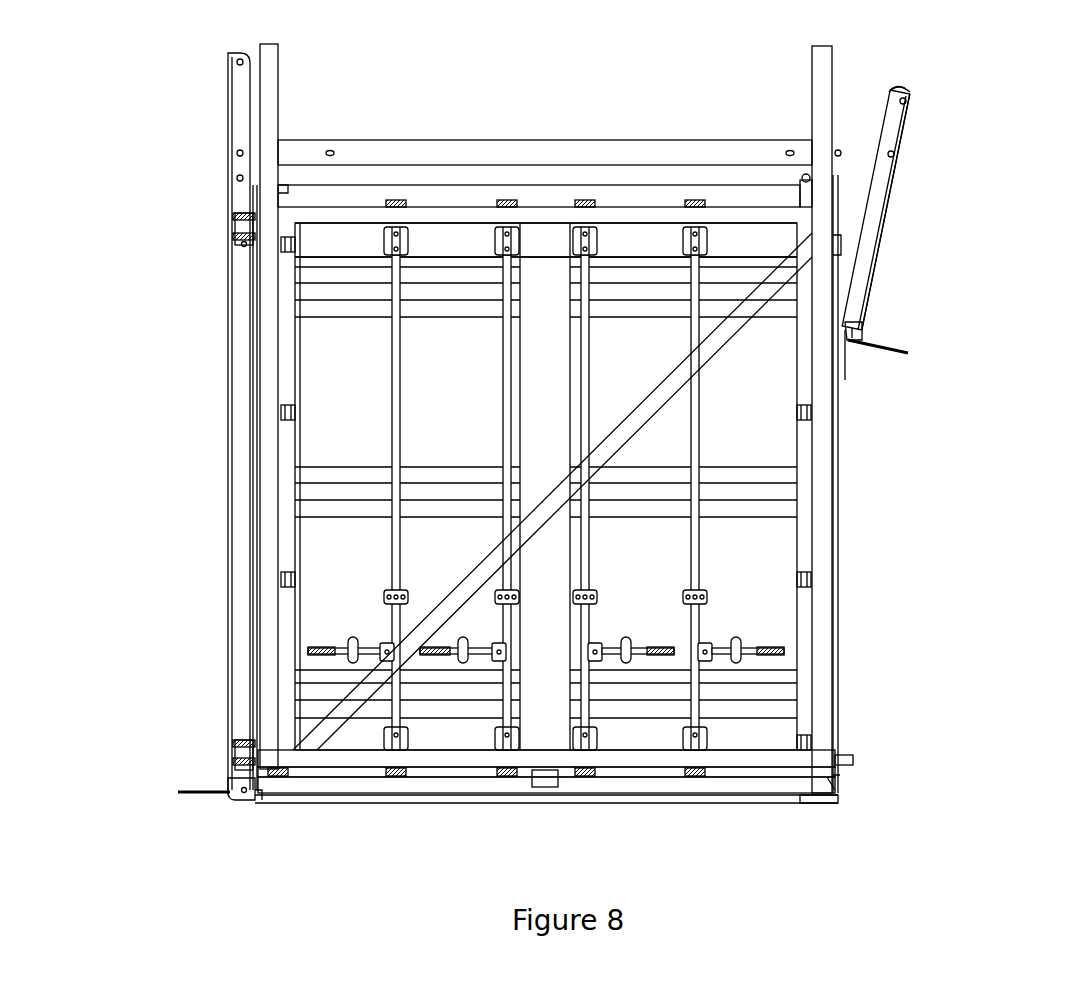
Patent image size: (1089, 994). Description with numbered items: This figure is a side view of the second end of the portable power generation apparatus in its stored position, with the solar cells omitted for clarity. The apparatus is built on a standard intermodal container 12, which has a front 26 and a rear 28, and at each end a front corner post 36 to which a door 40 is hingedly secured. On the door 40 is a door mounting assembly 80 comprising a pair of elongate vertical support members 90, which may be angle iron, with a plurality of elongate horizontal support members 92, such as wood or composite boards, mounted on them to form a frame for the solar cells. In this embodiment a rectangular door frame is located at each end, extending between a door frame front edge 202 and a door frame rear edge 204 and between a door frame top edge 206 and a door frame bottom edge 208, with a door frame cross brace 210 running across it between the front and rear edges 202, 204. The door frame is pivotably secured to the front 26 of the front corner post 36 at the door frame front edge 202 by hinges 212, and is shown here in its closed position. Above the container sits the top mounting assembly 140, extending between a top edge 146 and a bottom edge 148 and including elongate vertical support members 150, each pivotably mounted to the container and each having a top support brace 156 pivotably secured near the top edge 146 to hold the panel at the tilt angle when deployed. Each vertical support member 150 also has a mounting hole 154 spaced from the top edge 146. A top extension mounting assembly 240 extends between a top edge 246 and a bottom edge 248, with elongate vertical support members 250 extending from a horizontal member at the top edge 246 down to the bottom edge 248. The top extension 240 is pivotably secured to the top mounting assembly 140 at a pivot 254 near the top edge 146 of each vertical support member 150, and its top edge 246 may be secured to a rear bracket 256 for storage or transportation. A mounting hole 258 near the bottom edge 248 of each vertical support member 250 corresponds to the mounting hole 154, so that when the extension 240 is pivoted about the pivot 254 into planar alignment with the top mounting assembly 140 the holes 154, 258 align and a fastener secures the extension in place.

The intermodal container 12 is at (703, 183).
The front 26 is at (150, 398).
The rear 28 is at (962, 397).
The front corner post 36 is at (253, 705).
The door 40 is at (545, 730).
The door mounting assembly 80 is at (815, 85).
The vertical support member 90 is at (268, 78).
The horizontal support member 92 is at (425, 765).
The top mounting assembly 140 is at (575, 138).
The top edge 146 is at (917, 155).
The bottom edge 148 is at (216, 153).
The vertical support member 150 is at (663, 152).
The mounting hole 154 is at (838, 153).
The top support brace 156 is at (458, 178).
The door frame front edge 202 is at (250, 787).
The door frame rear edge 204 is at (842, 788).
The door frame top edge 206 is at (543, 195).
The door frame bottom edge 208 is at (495, 805).
The door frame cross brace 210 is at (595, 463).
The hinge 212 is at (237, 222).
The top extension mounting assembly 240 is at (882, 277).
The top edge 246 is at (855, 337).
The bottom edge 248 is at (913, 93).
The vertical support member 250 is at (870, 237).
The pivot 254 is at (893, 157).
The rear bracket 256 is at (846, 345).
The mounting hole 258 is at (906, 101).